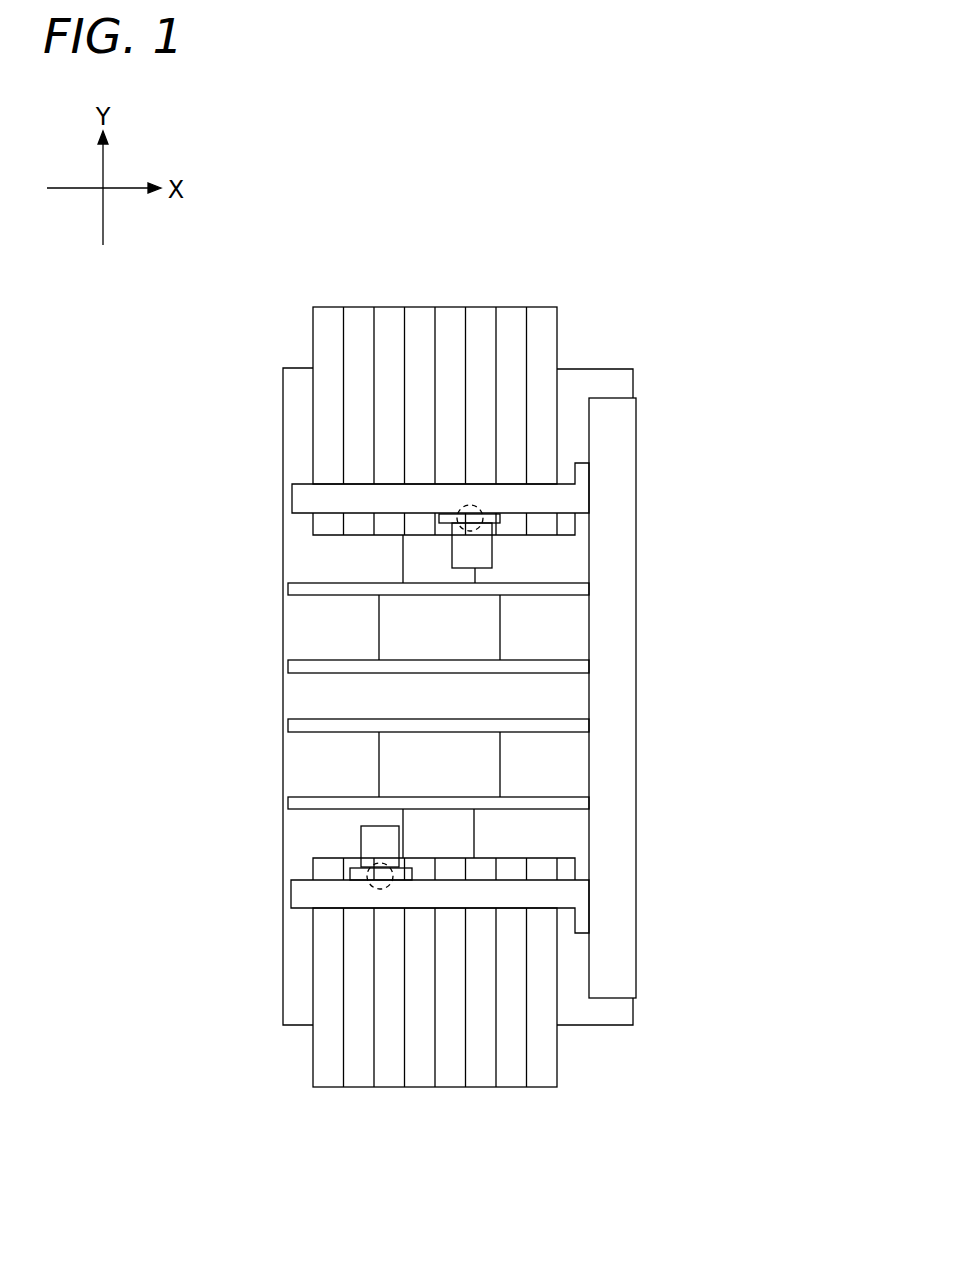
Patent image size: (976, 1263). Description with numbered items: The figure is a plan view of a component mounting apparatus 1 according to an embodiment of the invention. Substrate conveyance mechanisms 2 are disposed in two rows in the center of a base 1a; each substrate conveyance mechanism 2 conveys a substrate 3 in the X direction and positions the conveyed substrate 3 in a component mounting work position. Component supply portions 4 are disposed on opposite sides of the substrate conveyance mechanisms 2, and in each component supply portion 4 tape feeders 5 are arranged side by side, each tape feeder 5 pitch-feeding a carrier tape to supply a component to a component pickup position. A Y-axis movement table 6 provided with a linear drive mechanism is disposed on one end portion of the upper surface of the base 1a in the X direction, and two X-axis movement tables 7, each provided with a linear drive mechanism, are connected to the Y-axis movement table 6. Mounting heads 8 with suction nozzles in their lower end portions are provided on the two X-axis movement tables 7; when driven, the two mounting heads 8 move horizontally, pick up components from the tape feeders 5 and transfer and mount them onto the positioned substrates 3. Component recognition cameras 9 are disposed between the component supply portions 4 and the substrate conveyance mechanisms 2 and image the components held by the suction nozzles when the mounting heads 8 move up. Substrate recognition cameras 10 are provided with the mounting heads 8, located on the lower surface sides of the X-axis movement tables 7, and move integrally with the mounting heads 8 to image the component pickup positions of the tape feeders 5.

The component mounting apparatus 1 is at (443, 173).
The base 1a is at (298, 412).
The substrate conveyance mechanism 2 is at (290, 666).
The substrate 3 is at (489, 632).
The component supply portion 4 is at (444, 698).
The tape feeder 5 is at (386, 317).
The Y-axis movement table 6 is at (621, 486).
The X-axis movement table 7 is at (296, 492).
The mounting head 8 is at (484, 550).
The component recognition camera 9 is at (465, 573).
The substrate recognition camera 10 is at (480, 507).